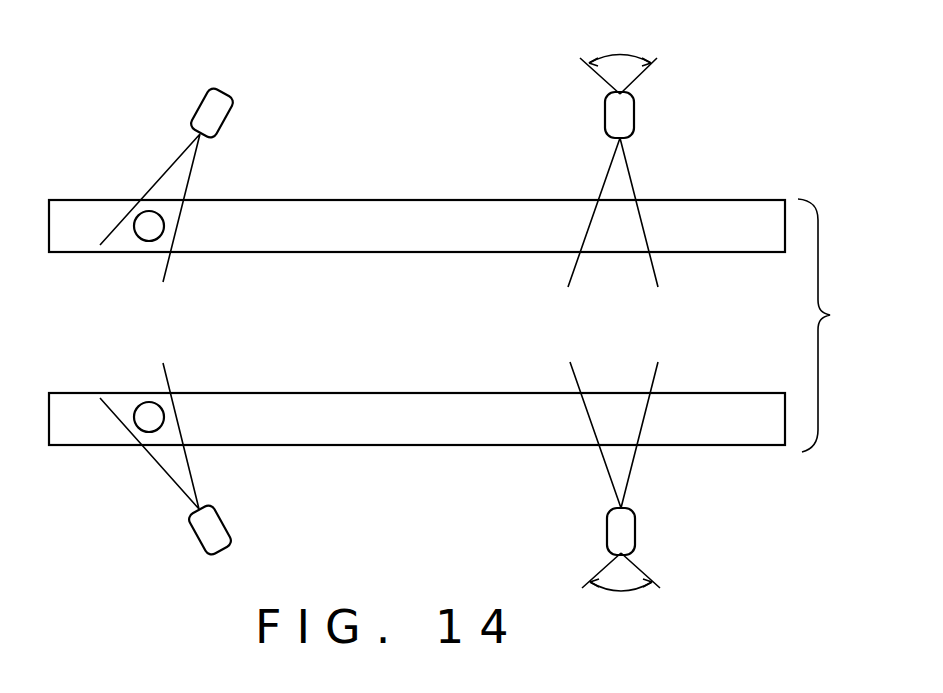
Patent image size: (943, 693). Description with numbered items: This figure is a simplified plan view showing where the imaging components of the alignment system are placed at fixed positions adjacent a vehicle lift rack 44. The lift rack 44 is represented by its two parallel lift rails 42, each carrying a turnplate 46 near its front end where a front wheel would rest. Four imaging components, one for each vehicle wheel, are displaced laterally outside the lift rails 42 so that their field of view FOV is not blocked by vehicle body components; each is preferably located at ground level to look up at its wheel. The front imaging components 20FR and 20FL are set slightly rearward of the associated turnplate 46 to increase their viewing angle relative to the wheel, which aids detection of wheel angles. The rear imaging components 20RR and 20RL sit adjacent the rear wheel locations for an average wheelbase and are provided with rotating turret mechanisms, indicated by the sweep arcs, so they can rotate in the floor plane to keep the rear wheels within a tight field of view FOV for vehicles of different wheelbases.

The front right imaging component 20FR is at (228, 115).
The rear right imaging component 20RR is at (635, 112).
The front left imaging component 20FL is at (223, 522).
The rear left imaging component 20RL is at (635, 533).
The lift rails 42 is at (328, 238).
The lift rack 44 is at (831, 325).
The turnplate 46 is at (152, 230).
The field of view FOV is at (192, 168).